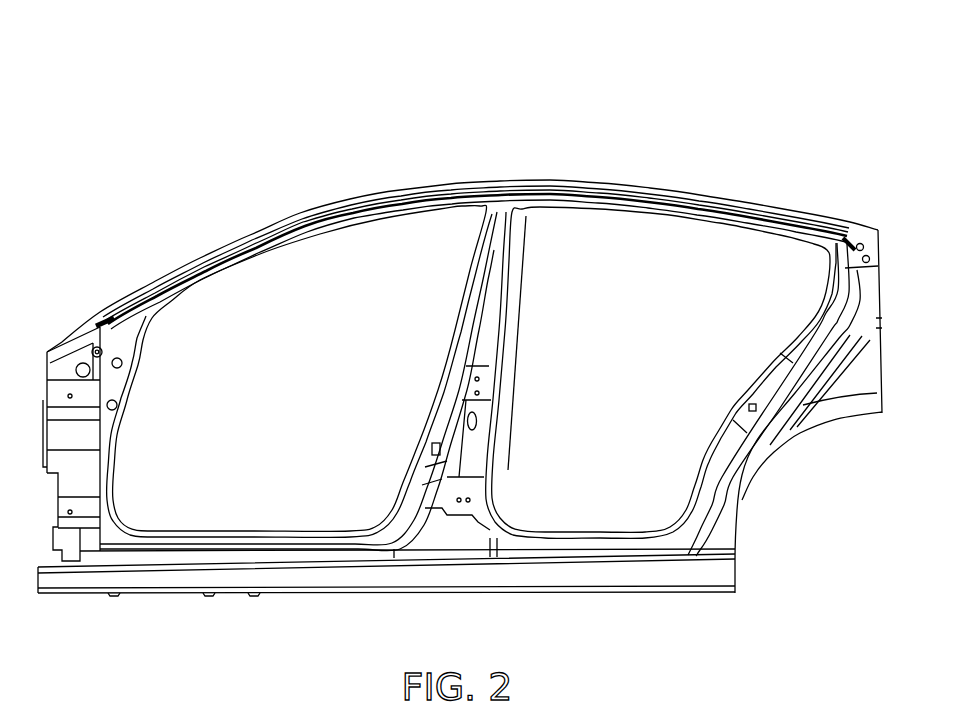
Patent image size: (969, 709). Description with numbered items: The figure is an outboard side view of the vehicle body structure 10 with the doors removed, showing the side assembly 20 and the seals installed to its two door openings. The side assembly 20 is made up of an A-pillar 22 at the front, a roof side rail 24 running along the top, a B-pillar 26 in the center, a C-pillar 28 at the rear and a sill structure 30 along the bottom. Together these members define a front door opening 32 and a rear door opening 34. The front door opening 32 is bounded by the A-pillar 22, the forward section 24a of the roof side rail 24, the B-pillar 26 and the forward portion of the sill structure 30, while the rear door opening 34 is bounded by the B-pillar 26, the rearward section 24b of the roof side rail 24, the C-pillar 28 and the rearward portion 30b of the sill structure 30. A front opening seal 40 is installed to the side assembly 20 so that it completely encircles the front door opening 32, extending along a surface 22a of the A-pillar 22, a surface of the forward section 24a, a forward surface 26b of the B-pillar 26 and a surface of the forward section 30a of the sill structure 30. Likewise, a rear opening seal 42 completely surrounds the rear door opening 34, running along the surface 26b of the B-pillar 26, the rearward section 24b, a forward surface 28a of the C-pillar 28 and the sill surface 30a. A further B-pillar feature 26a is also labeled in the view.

The vehicle body structure 10 is at (670, 148).
The side assembly 20 is at (566, 172).
The A-pillar 22 is at (105, 425).
The surface of the A-pillar 22a is at (125, 384).
The roof side rail 24 is at (345, 197).
The forward section of the roof side rail 24a is at (245, 235).
The rearward section of the roof side rail 24b is at (795, 205).
The B-pillar 26 is at (505, 345).
The center pillar lower bracket 26a is at (437, 430).
The forward surface of the B-pillar 26b is at (493, 527).
The C-pillar 28 is at (722, 530).
The forward surface of the C-pillar 28a is at (815, 332).
The sill structure 30 is at (430, 577).
The forward section of the sill structure 30a is at (232, 580).
The rearward portion of the sill structure 30b is at (583, 575).
The front door opening 32 is at (295, 248).
The rear door opening 34 is at (632, 218).
The front opening seal 40 is at (440, 344).
The rear opening seal 42 is at (740, 390).